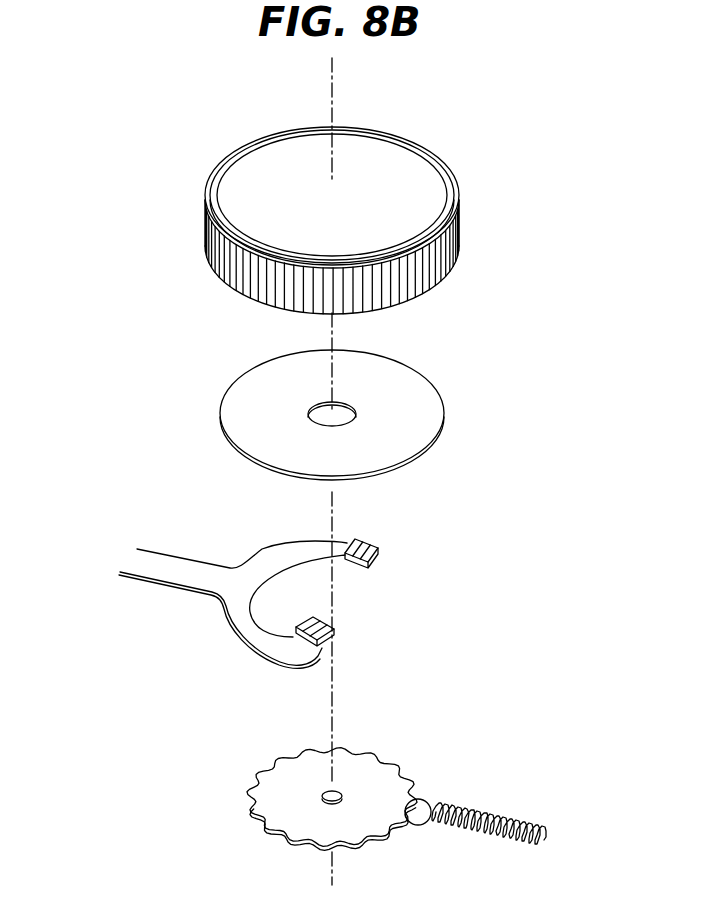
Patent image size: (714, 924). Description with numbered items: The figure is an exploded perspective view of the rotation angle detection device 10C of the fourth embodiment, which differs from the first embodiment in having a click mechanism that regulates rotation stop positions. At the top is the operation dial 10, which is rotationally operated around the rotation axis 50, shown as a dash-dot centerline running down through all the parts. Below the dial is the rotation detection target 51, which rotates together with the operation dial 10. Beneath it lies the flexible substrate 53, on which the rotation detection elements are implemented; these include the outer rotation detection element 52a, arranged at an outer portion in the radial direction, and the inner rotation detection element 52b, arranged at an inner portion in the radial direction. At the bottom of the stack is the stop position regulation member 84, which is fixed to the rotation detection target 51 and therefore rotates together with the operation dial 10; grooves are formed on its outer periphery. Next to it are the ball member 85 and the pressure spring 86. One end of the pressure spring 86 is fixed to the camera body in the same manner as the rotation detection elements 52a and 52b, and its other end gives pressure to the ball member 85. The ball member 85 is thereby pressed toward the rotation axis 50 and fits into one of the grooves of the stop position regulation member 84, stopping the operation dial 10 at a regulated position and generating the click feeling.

The operation dial 10 is at (240, 170).
The rotation angle detection device 10C is at (513, 197).
The rotation axis 50 is at (330, 93).
The rotation detection target 51 is at (243, 390).
The outer rotation detection element 52a is at (365, 569).
The inner rotation detection element 52b is at (331, 645).
The flexible substrate 53 is at (257, 562).
The stop position regulation member 84 is at (283, 773).
The ball member 85 is at (412, 817).
The pressure spring 86 is at (497, 839).